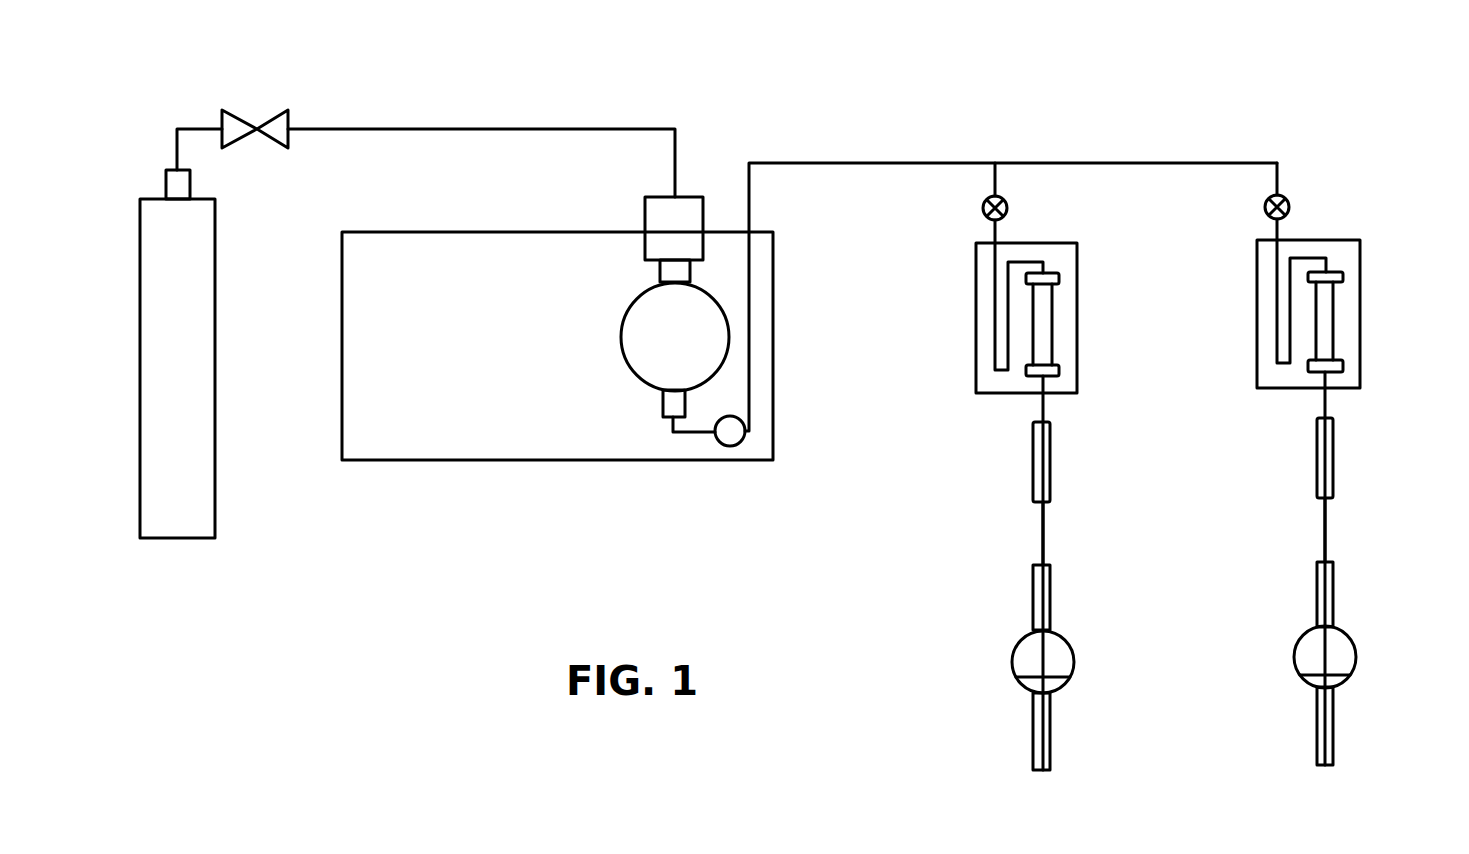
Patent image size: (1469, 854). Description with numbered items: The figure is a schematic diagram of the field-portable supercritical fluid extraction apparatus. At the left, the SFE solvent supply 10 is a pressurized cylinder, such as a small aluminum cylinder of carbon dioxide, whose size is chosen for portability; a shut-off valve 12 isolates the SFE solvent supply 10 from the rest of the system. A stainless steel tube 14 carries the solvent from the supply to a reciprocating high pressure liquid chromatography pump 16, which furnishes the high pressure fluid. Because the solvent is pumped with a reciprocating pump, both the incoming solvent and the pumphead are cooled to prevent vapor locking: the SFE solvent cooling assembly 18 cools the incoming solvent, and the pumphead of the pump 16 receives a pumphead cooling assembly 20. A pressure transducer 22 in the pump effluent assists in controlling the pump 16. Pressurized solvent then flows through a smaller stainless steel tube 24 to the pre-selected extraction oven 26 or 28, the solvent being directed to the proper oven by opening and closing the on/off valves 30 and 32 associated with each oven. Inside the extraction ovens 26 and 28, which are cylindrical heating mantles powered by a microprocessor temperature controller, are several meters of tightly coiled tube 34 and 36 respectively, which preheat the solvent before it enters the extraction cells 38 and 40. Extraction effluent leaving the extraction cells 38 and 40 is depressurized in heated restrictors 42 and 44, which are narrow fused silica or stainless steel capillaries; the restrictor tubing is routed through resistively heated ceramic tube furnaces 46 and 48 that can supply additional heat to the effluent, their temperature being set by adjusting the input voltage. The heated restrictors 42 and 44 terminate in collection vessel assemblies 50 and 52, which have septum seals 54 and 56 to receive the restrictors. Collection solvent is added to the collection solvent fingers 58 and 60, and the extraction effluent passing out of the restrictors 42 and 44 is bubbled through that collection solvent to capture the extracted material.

The SFE solvent supply 10 is at (165, 395).
The shut-off valve 12 is at (257, 128).
The tube 14 is at (500, 128).
The high pressure liquid chromatography pump 16 is at (625, 338).
The SFE solvent cooling assembly 18 is at (693, 195).
The pumphead cooling assembly 20 is at (663, 407).
The pressure transducer 22 is at (717, 447).
The tube 24 is at (808, 163).
The extraction oven 26 is at (976, 291).
The extraction oven 28 is at (1360, 328).
The on/off valve 30 is at (1008, 207).
The on/off valve 32 is at (1289, 205).
The tightly coiled tube 34 is at (1007, 343).
The tightly coiled tube 36 is at (1278, 358).
The extraction cell 38 is at (1053, 317).
The extraction cell 40 is at (1335, 307).
The heated restrictor 42 is at (1043, 538).
The heated restrictor 44 is at (1325, 528).
The ceramic tube furnace 46 is at (1050, 475).
The ceramic tube furnace 48 is at (1334, 452).
The collection vessel assembly 50 is at (1010, 652).
The collection vessel assembly 52 is at (1357, 652).
The septum seal 54 is at (1050, 595).
The septum seal 56 is at (1333, 595).
The collection solvent finger 58 is at (1033, 732).
The collection solvent finger 60 is at (1333, 730).